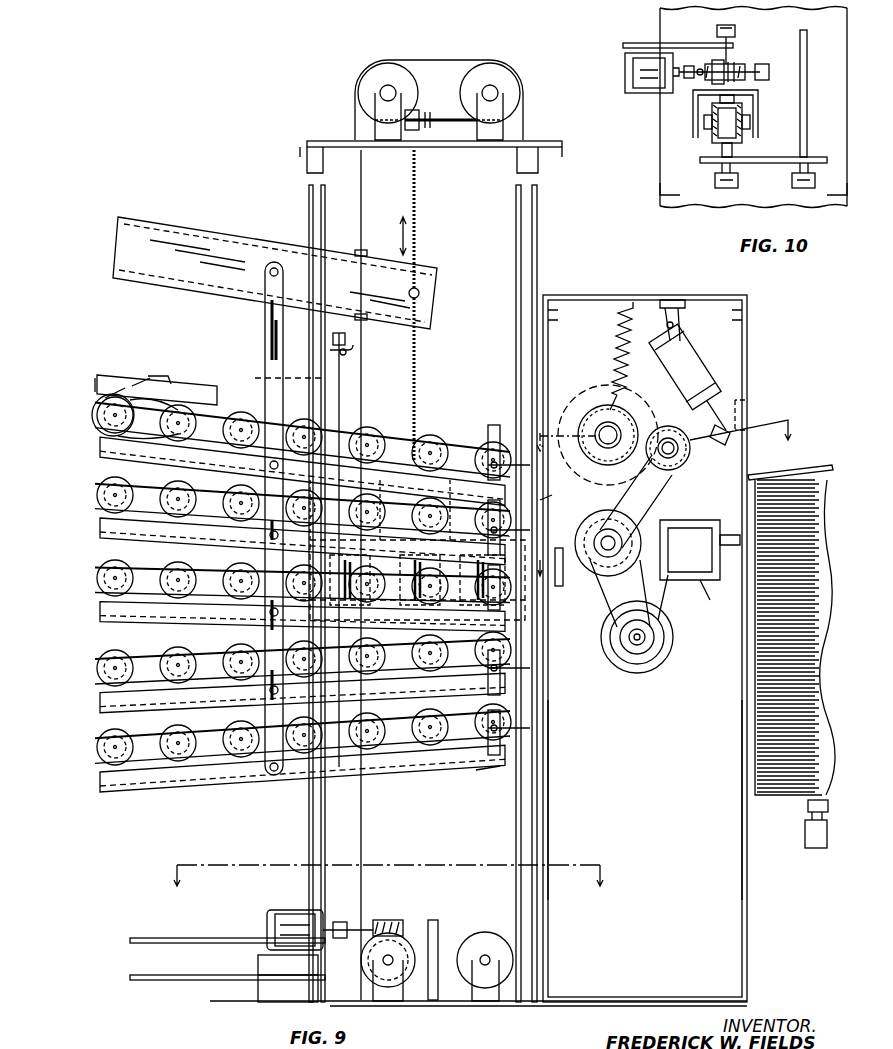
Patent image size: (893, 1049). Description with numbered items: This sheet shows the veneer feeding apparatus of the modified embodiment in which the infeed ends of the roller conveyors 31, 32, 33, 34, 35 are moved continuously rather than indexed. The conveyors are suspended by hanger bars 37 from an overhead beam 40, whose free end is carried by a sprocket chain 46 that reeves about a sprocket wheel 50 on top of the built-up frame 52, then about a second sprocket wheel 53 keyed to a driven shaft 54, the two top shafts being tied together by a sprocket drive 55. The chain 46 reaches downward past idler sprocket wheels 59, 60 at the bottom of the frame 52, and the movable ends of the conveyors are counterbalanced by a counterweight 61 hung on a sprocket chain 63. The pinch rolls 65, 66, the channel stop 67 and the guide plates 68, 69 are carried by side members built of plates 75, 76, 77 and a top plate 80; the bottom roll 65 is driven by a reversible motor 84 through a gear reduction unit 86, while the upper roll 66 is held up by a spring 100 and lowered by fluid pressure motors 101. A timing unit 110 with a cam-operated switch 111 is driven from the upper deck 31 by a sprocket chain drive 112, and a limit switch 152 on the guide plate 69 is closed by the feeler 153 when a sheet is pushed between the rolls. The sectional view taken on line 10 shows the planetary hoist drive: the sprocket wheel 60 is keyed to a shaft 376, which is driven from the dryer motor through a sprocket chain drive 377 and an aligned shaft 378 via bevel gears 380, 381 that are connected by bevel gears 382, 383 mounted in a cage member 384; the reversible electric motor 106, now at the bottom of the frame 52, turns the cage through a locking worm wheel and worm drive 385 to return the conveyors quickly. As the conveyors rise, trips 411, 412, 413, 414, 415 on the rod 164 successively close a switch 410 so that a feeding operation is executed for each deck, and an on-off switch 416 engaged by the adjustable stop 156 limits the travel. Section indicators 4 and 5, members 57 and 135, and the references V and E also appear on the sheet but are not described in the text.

In FIG. 9, the section line 4 is at (740, 540).
In FIG. 9, the section line 5 is at (669, 424).
In FIG. 9, the section line 10— 10 is at (391, 892).
In FIG. 9, the conveyor 31 is at (223, 465).
In FIG. 9, the conveyor 32 is at (220, 541).
In FIG. 9, the conveyor 33 is at (219, 620).
In FIG. 9, the conveyor 34 is at (221, 703).
In FIG. 9, the conveyor 35 is at (220, 783).
In FIG. 9, the hanger bar 37 is at (266, 323).
In FIG. 9, the beam 40 is at (224, 226).
In FIG. 9, the sprocket chain 46 is at (363, 200).
In FIG. 9, the sprocket wheel 50 is at (391, 64).
In FIG. 9, the frame 52 is at (538, 276).
In FIG. 10, the frame 52 is at (658, 192).
In FIG. 9, the sprocket wheel 53 is at (512, 58).
In FIG. 9, the driven shaft 54 is at (498, 92).
In FIG. 9, the sprocket drive 55 is at (473, 63).
In FIG. 9, the vertical rod 57 is at (345, 772).
In FIG. 9, the idler sprocket wheel 59 is at (490, 932).
In FIG. 10, the idler sprocket wheel 59 is at (806, 160).
In FIG. 9, the idler sprocket wheel 60 is at (412, 990).
In FIG. 10, the idler sprocket wheel 60 is at (705, 165).
In FIG. 9, the counterweight 61 is at (408, 622).
In FIG. 9, the sprocket chain 63 is at (419, 200).
In FIG. 9, the bottom pinch roll 65 is at (586, 612).
In FIG. 9, the upper pinch roll 66 is at (598, 405).
In FIG. 9, the stop 67 is at (540, 500).
In FIG. 9, the guide plate 68 is at (695, 508).
In FIG. 9, the guide plate 69 is at (745, 400).
In FIG. 9, the plate 75 is at (650, 839).
In FIG. 9, the plate 76 is at (740, 795).
In FIG. 9, the plate 77 is at (552, 795).
In FIG. 9, the top plate 80 is at (632, 294).
In FIG. 9, the reversible electric motor 84 is at (700, 600).
In FIG. 9, the gear reduction unit 86 is at (688, 615).
In FIG. 9, the spring 100 is at (628, 331).
In FIG. 9, the fluid pressure operated motor 101 is at (700, 368).
In FIG. 9, the reversible electric motor 106 is at (295, 908).
In FIG. 10, the reversible electric motor 106 is at (648, 100).
In FIG. 9, the timing unit 110 is at (120, 376).
In FIG. 9, the cam-operated switch 111 is at (160, 376).
In FIG. 9, the sprocket chain drive 112 is at (129, 442).
In FIG. 9, the cross bar 135 is at (351, 606).
In FIG. 9, the limit switch 152 is at (683, 410).
In FIG. 9, the feeler 153 is at (672, 476).
In FIG. 9, the adjustable stop 156 is at (348, 353).
In FIG. 9, the rod 164 is at (476, 772).
In FIG. 10, the shaft 376 is at (728, 188).
In FIG. 9, the sprocket chain drive 377 is at (240, 936).
In FIG. 10, the sprocket chain drive 377 is at (700, 44).
In FIG. 10, the shaft 378 is at (736, 37).
In FIG. 10, the bevel gear 380 is at (712, 152).
In FIG. 10, the bevel gear 381 is at (745, 98).
In FIG. 10, the bevel gear 382 is at (704, 130).
In FIG. 10, the bevel gear 383 is at (750, 125).
In FIG. 10, the cage member 384 is at (748, 112).
In FIG. 9, the locking worm wheel and worm drive 385 is at (390, 920).
In FIG. 10, the locking worm wheel and worm drive 385 is at (740, 68).
In FIG. 9, the normally open switch 410 is at (562, 588).
In FIG. 9, the adjustable stop 411 is at (478, 452).
In FIG. 9, the adjustable stop 412 is at (490, 545).
In FIG. 9, the adjustable stop 413 is at (488, 612).
In FIG. 9, the adjustable stop 414 is at (548, 675).
In FIG. 9, the adjustable stop 415 is at (548, 733).
In FIG. 9, the on-off switch 416 is at (265, 378).
In FIG. 9, the curtain V is at (803, 466).
In FIG. 9, the drive element E is at (794, 861).